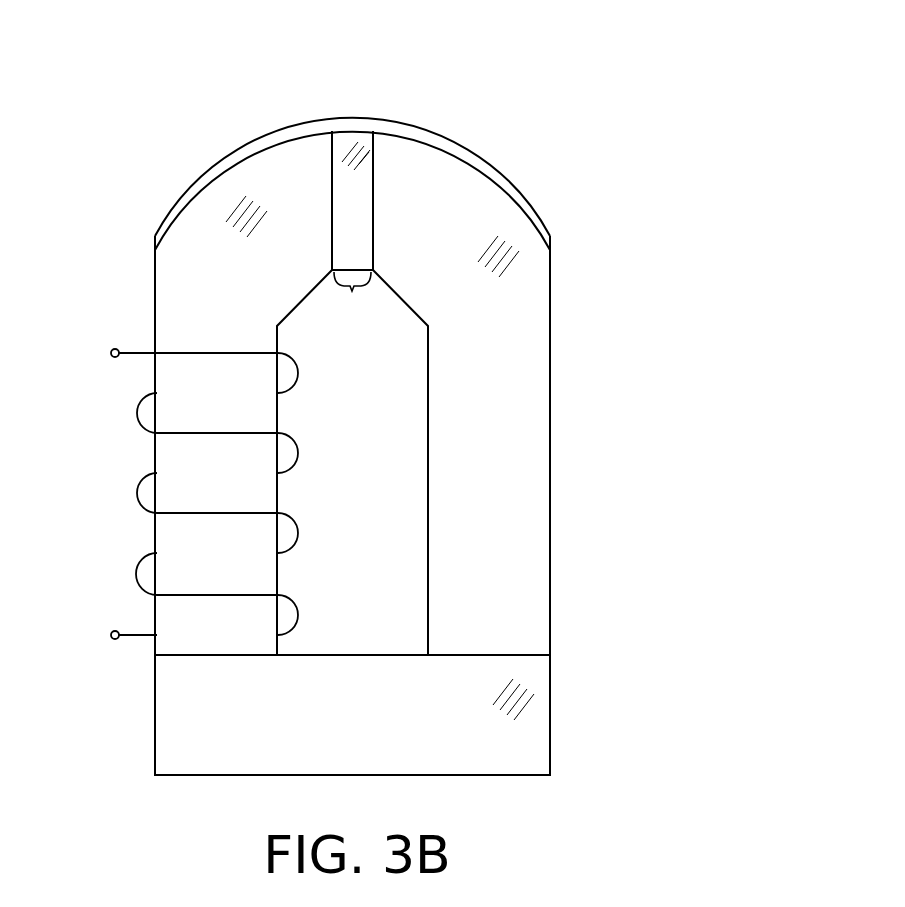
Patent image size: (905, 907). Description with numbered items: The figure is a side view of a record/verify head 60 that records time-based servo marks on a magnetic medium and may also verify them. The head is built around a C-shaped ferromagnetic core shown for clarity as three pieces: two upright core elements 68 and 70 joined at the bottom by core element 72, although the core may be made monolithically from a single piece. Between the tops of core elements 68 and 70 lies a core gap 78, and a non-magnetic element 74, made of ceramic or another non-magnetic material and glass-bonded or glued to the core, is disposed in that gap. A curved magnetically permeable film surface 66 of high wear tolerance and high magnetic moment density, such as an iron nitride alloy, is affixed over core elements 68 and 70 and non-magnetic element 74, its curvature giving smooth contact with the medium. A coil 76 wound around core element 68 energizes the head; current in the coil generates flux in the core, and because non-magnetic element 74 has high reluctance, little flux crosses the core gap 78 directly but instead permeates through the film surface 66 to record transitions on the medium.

The record/verify head 60 is at (95, 230).
The magnetically permeable film surface 66 is at (352, 117).
The core element 68 is at (201, 318).
The core element 70 is at (483, 316).
The core element 72 is at (346, 731).
The non-magnetic element 74 is at (338, 218).
The coil 76 is at (298, 453).
The core gap 78 is at (352, 301).